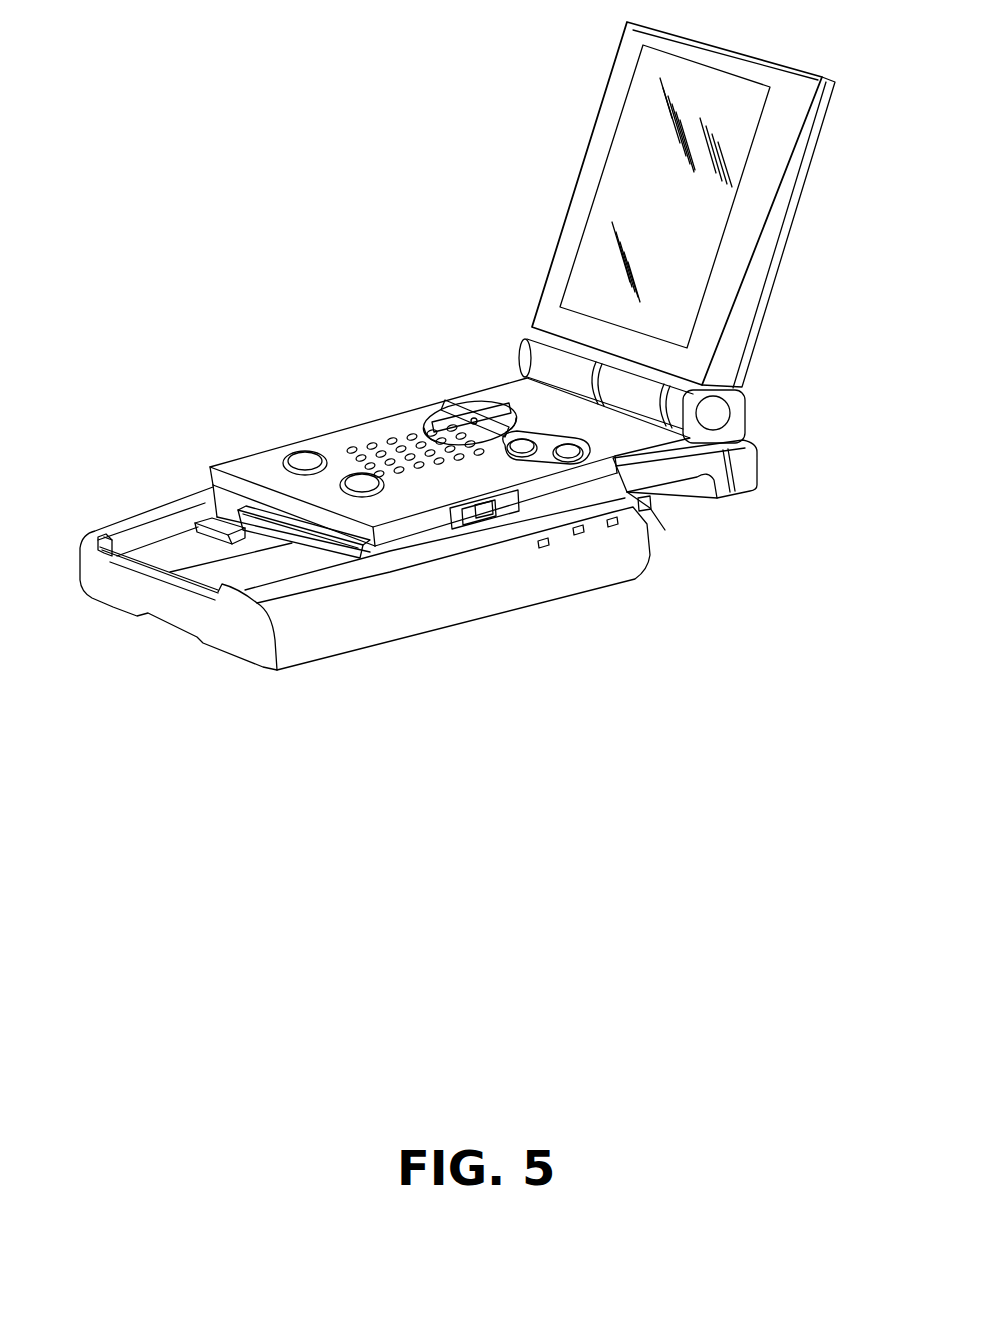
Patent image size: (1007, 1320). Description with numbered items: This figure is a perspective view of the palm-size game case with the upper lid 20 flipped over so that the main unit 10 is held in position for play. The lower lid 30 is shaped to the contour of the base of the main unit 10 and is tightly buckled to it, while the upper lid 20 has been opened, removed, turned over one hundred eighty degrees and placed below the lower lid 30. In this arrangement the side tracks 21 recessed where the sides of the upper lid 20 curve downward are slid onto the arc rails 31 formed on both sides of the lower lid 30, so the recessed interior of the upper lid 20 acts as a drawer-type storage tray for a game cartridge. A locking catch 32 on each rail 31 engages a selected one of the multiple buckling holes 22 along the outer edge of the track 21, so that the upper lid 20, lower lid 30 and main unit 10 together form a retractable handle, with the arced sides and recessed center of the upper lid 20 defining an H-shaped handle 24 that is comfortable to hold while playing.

The main unit 10 is at (483, 387).
The upper lid 20 is at (357, 602).
The track 21 is at (160, 535).
The buckling holes 22 is at (545, 547).
The H-shaped handle 24 is at (158, 636).
The lower lid 30 is at (715, 531).
The arc rail 31 is at (713, 500).
The locking catch 32 is at (648, 506).